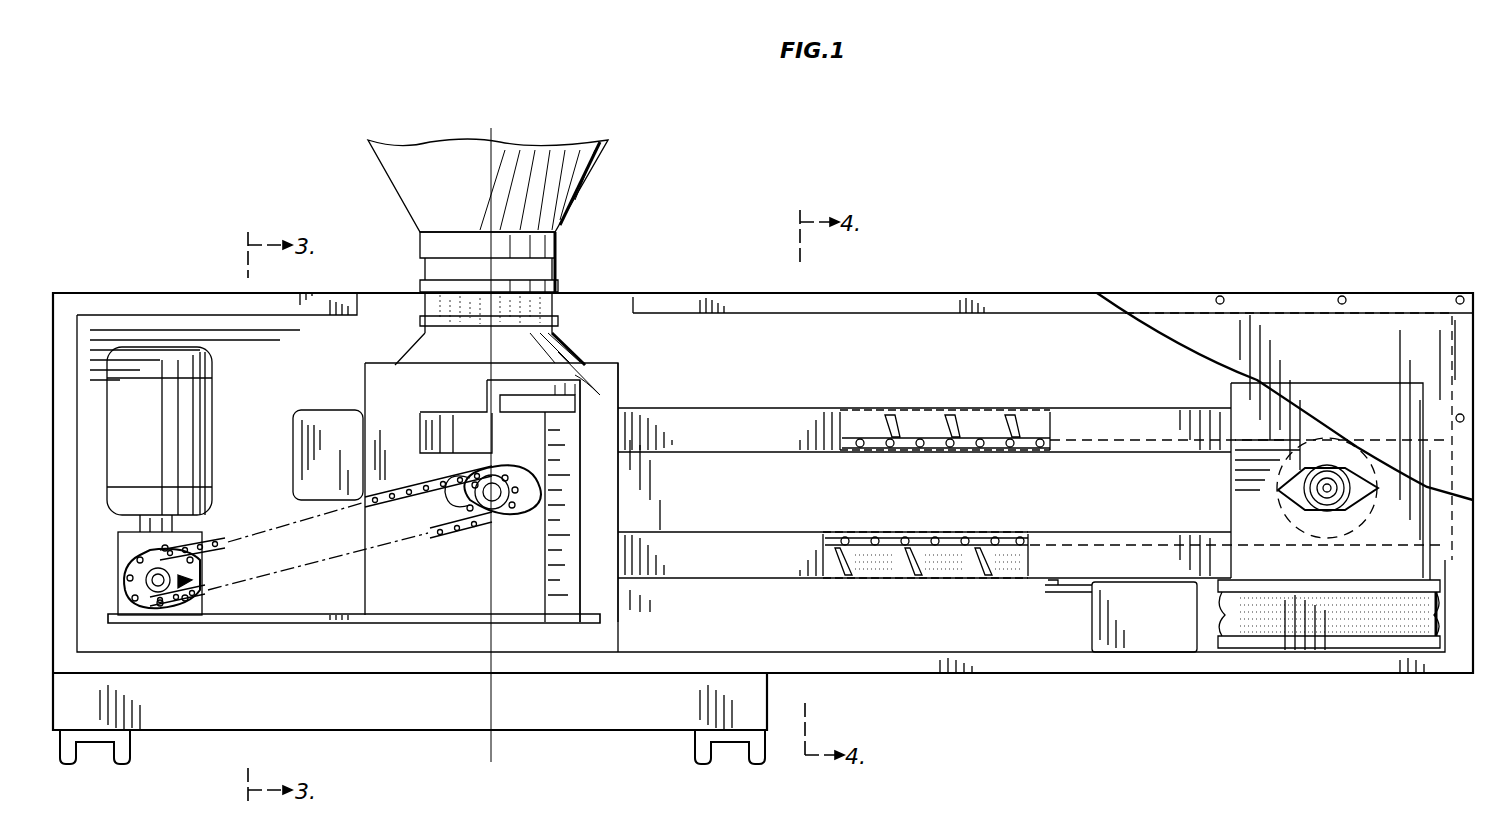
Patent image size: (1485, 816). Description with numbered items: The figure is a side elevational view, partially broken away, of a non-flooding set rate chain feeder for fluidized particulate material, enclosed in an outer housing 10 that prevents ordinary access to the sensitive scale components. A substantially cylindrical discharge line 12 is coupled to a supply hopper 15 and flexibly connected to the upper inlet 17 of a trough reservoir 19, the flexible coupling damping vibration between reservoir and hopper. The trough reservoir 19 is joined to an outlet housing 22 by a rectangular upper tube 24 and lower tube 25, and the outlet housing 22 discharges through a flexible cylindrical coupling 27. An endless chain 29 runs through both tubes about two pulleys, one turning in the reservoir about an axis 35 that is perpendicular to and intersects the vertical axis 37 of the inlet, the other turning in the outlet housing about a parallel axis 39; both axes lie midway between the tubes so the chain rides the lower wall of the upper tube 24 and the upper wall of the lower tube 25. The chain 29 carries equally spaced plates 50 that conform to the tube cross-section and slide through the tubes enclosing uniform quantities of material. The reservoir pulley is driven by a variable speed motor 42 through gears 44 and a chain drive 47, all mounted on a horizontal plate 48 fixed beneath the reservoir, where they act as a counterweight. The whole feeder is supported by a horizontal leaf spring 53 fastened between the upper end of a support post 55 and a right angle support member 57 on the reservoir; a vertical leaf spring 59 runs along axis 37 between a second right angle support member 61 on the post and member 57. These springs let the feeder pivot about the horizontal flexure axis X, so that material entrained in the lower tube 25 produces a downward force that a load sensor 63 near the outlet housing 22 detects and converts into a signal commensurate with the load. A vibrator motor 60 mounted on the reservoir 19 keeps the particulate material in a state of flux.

The outer housing 10 is at (1062, 290).
The discharge line 12 is at (560, 262).
The supply hopper 15 is at (395, 172).
The upper inlet 17 is at (416, 348).
The trough reservoir 19 is at (363, 378).
The outlet housing 22 is at (1240, 398).
The upper tube 24 is at (830, 405).
The lower tube 25 is at (803, 580).
The flexible cylindrical coupling 27 is at (1350, 648).
The endless chain 29 is at (995, 530).
The axis of pulley 35 is at (483, 525).
The axis of inlet discharge line 37 is at (488, 140).
The axis of pulley 39 is at (1330, 484).
The variable speed motor 42 is at (142, 424).
The gears 44 is at (205, 570).
The chain drive 47 is at (292, 580).
The horizontal plate 48 is at (275, 623).
The plates 50 is at (1000, 410).
The leaf spring 53 is at (514, 436).
The support post 55 is at (588, 508).
The right angle support member 57 is at (416, 450).
The vertical leaf spring 59 is at (548, 360).
The vibrator motor 60 is at (300, 440).
The second right angle support member 61 is at (615, 378).
The load sensor 63 is at (1100, 608).
The horizontal axis or flexure point X is at (480, 402).